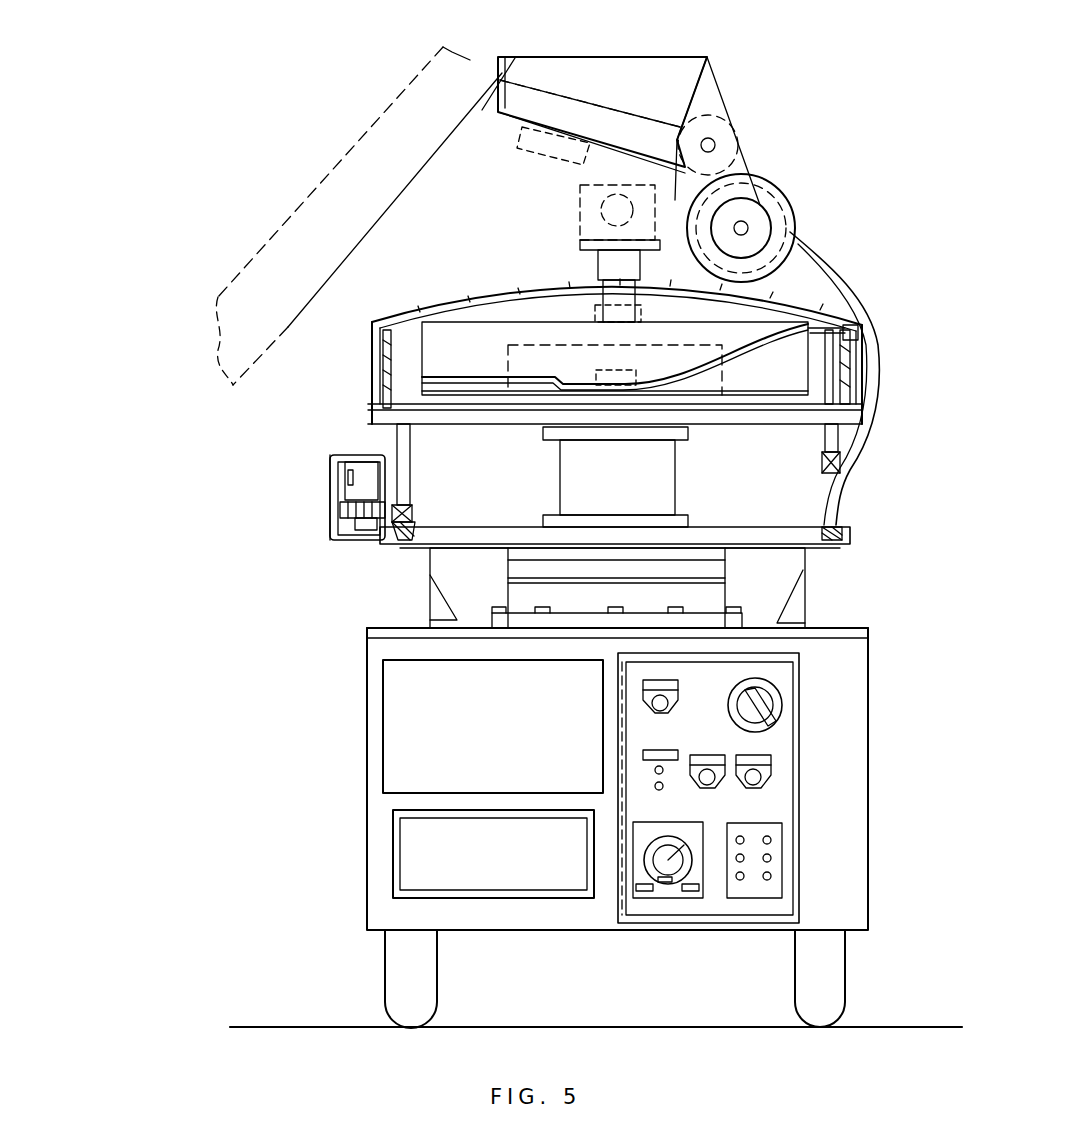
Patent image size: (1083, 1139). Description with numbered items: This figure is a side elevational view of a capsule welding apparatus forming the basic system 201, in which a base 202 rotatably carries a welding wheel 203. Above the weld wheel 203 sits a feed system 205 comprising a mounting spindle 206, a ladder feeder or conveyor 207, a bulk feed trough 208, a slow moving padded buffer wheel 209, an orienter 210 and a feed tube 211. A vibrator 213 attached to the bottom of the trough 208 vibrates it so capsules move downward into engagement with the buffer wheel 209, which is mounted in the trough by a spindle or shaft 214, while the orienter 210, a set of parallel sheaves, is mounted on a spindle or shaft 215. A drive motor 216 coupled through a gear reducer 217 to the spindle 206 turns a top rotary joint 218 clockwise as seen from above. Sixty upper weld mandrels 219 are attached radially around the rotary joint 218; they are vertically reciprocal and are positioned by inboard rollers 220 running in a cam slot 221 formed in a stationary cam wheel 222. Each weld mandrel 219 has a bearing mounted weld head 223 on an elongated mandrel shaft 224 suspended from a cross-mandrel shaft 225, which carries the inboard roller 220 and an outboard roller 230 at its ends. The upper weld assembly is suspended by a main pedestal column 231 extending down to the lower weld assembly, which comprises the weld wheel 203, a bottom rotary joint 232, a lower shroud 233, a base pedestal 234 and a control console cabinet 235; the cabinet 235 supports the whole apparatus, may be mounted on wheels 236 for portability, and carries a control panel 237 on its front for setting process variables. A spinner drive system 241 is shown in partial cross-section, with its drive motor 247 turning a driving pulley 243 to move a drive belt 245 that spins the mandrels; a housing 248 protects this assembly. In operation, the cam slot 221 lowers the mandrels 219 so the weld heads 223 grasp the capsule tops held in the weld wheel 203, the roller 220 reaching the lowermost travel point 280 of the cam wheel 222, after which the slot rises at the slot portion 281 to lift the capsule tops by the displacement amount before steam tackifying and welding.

The basic system 201 is at (882, 745).
The base 202 is at (870, 818).
The welding wheel 203 is at (855, 538).
The feed system 205 is at (505, 143).
The mounting spindle 206 is at (622, 287).
The ladder feeder (conveyor) 207 is at (255, 370).
The bulk feed trough 208 is at (594, 115).
The padded buffer wheel 209 is at (728, 117).
The orienter 210 is at (780, 228).
The feed tube 211 is at (820, 258).
The vibrator 213 is at (540, 150).
The spindle or shaft 214 is at (714, 145).
The spindle or shaft 215 is at (748, 228).
The drive motor 216 is at (580, 208).
The gear reducer 217 is at (598, 258).
The top rotary joint 218 is at (692, 312).
The upper weld mandrels 219 is at (410, 470).
The inboard roller 220 is at (800, 340).
The cam slot 221 is at (795, 330).
The stationary cam wheel 222 is at (455, 322).
The weld head 223 is at (818, 468).
The mandrel shaft 224 is at (872, 448).
The cross-mandrel shaft 225 is at (855, 335).
The outboard roller 230 is at (866, 345).
The main pedestal column 231 is at (676, 468).
The bottom rotary joint 232 is at (725, 565).
The lower shroud 233 is at (790, 620).
The base pedestal 234 is at (720, 590).
The control console cabinet 235 is at (857, 657).
The wheels 236 is at (438, 987).
The control panel 237 is at (708, 788).
The spinner drive system 241 is at (327, 487).
The driving pulley 243 is at (362, 530).
The drive belt 245 is at (340, 512).
The drive motor 247 is at (360, 455).
The cover 248 is at (330, 470).
The lowermost travel point 280 is at (588, 386).
The slot portion 281 is at (535, 378).